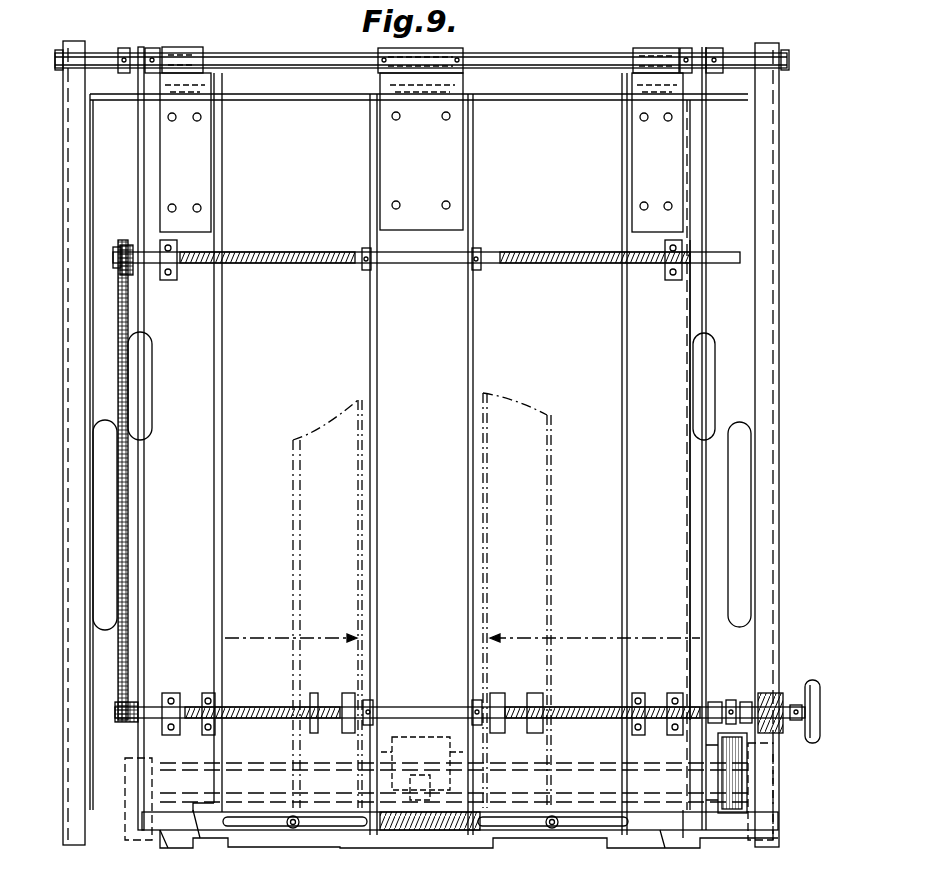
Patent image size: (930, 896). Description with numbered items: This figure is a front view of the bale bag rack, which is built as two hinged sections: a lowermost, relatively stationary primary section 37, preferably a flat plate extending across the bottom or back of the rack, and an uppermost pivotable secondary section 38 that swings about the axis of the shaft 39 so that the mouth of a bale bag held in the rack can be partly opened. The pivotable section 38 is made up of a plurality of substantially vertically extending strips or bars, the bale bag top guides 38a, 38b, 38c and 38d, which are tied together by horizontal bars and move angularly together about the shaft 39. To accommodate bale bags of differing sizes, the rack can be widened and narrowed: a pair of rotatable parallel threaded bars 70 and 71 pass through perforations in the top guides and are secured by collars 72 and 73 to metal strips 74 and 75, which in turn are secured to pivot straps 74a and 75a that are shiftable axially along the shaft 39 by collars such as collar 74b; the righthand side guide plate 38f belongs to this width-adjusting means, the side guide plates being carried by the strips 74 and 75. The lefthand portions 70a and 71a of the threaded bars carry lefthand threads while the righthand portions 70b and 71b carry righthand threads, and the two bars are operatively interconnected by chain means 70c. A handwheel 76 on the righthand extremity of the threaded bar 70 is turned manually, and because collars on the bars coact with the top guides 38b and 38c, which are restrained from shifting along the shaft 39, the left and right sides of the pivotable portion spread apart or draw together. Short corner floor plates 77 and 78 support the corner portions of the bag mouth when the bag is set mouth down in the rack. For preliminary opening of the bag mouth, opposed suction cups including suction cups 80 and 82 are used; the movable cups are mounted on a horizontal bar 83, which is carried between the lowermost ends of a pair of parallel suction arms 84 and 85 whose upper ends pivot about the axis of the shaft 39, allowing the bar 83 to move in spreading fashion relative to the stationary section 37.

The primary section 37 is at (735, 212).
The secondary section 38 is at (70, 275).
The bale bag top guide 38a is at (222, 372).
The bale bag top guide 38b is at (372, 358).
The bale bag top guide 38c is at (473, 366).
The bale bag top guide 38d is at (625, 366).
The side guide plate 38f is at (687, 560).
The shaft 39 is at (300, 55).
The threaded bar 70 is at (410, 707).
The lefthand portion of threaded bar 70a is at (246, 708).
The righthand portion of threaded bar 70b is at (578, 708).
The chain means 70c is at (128, 372).
The threaded bar 71 is at (432, 268).
The lefthand portion of threaded bar 71a is at (298, 266).
The righthand portion of threaded bar 71b is at (555, 266).
The collar 72 is at (170, 693).
The collar 73 is at (170, 282).
The metal strip 74 is at (205, 594).
The pivot strap 74a is at (197, 142).
The collar 74b is at (195, 48).
The metal strip 75 is at (640, 48).
The pivot strap 75a is at (650, 145).
The handwheel 76 is at (810, 680).
The corner floor plate 77 is at (162, 849).
The corner floor plate 78 is at (694, 849).
The suction cup 80 is at (552, 832).
The suction cup 82 is at (290, 832).
The bar 83 is at (422, 832).
The suction arm 84 is at (143, 500).
The suction arm 85 is at (702, 487).